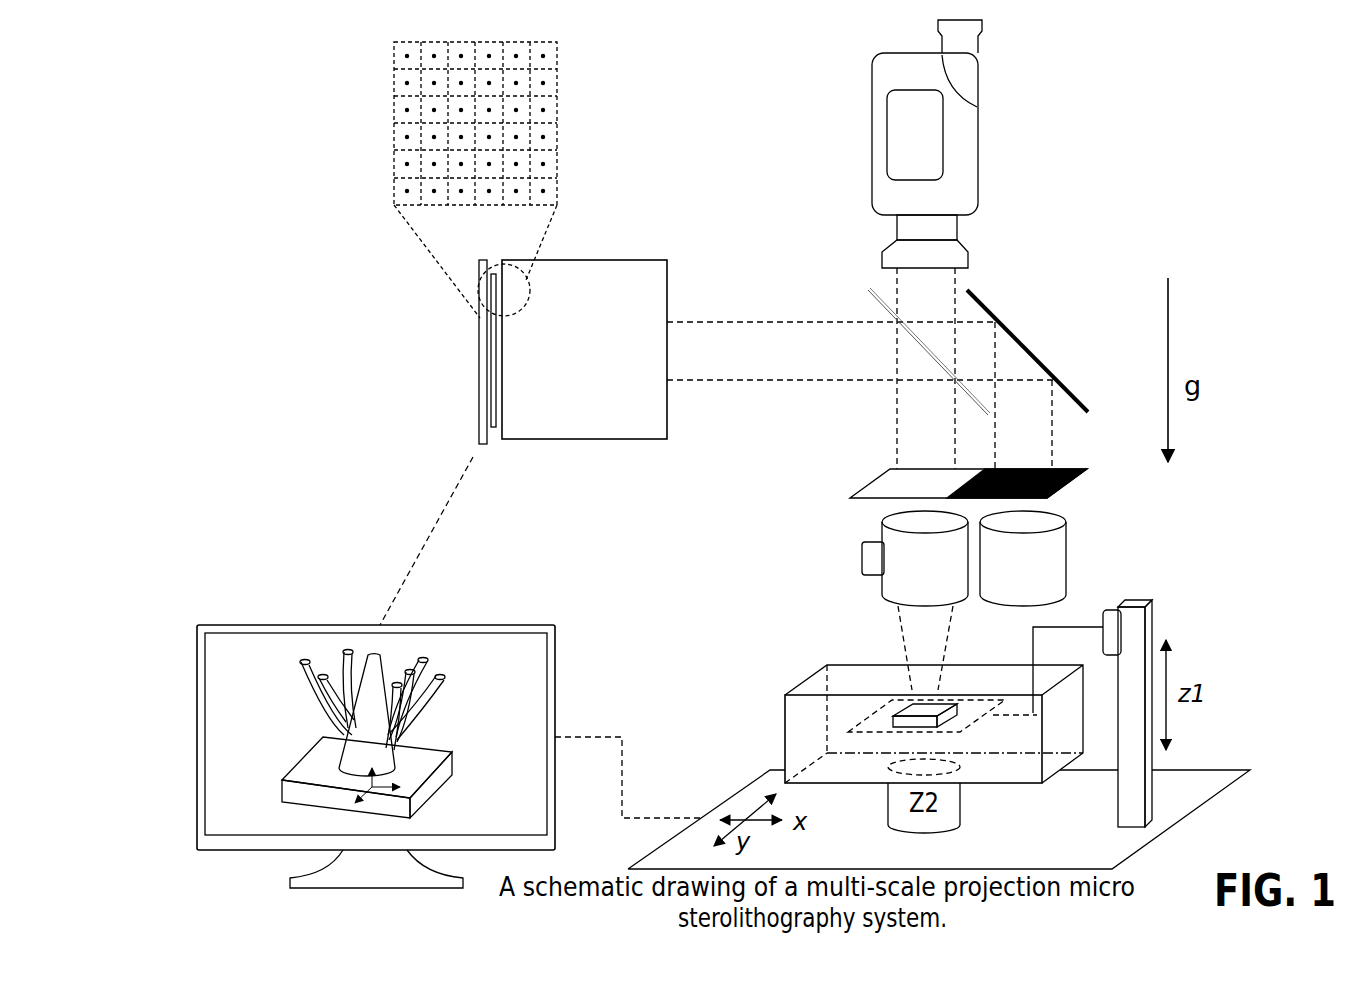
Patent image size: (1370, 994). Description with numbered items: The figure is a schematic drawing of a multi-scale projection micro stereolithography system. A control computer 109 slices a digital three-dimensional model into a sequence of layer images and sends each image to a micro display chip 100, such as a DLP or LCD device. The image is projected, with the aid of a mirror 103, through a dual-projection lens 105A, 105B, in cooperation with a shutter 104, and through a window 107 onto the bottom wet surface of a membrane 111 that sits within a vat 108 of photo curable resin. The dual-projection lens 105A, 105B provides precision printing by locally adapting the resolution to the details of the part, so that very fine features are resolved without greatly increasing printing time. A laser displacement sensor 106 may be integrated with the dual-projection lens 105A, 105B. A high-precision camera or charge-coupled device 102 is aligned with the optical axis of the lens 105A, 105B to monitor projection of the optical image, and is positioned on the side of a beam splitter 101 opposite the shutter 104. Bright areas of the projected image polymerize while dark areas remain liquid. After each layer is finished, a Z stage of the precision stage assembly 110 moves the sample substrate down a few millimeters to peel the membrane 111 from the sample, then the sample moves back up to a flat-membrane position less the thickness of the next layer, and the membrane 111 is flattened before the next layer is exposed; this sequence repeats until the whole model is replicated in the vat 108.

The micro display chip 100 is at (623, 260).
The beam splitter 101 is at (868, 292).
The charge-coupled device (CCD) 102 is at (978, 152).
The mirror 103 is at (985, 298).
The shutter 104 is at (1068, 462).
The dual-projection lens 105A is at (1045, 527).
The dual-projection lens 105B is at (905, 527).
The laser displacement sensor 106 is at (862, 558).
The window 107 is at (873, 682).
The vat 108 is at (785, 733).
The control computer 109 is at (290, 883).
The precision stage assembly 110 is at (1214, 796).
The membrane 111 is at (967, 725).